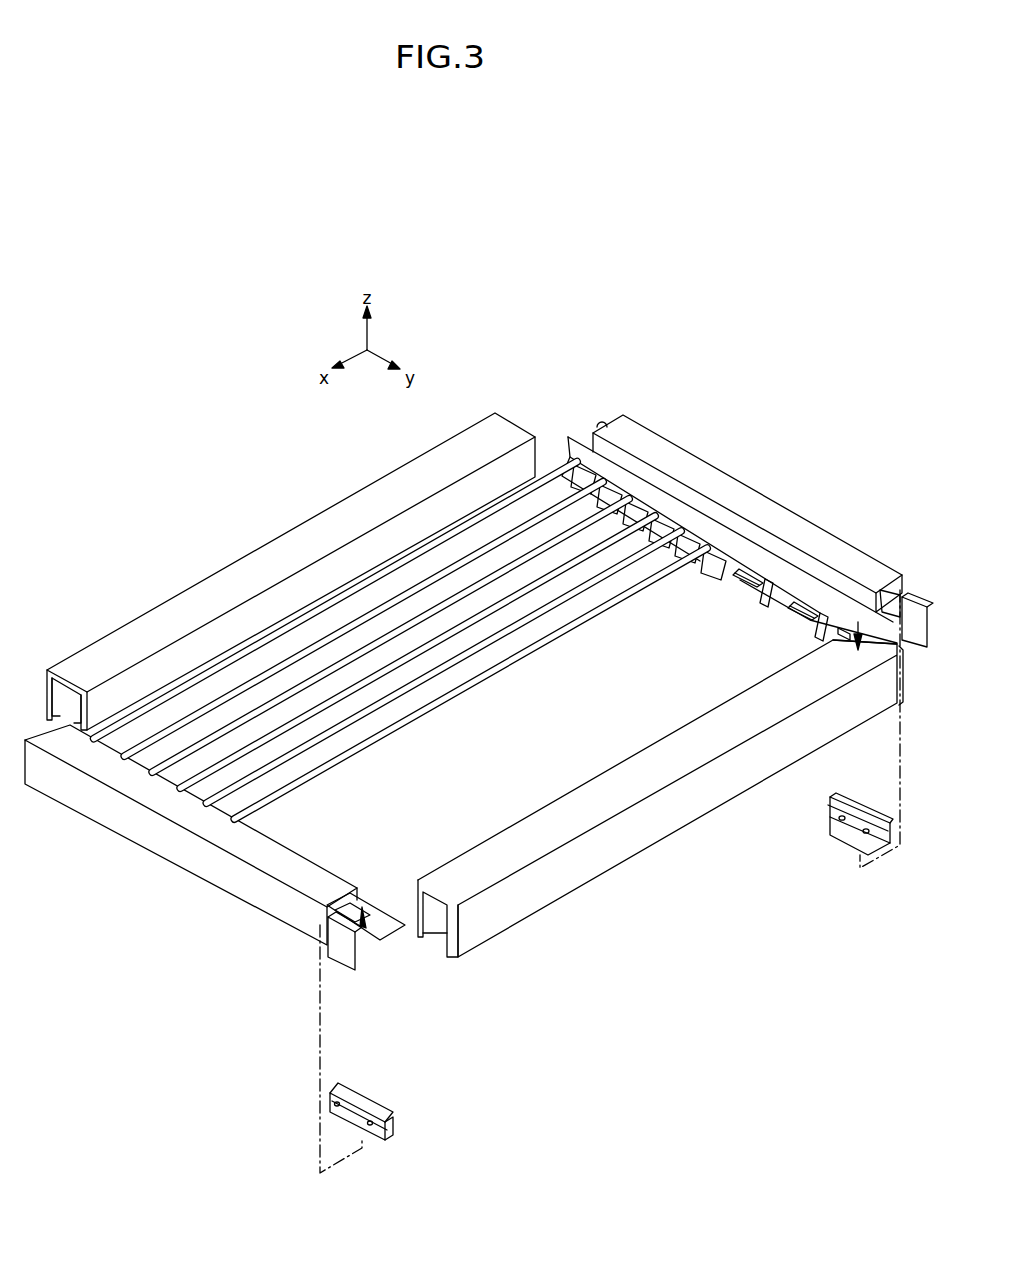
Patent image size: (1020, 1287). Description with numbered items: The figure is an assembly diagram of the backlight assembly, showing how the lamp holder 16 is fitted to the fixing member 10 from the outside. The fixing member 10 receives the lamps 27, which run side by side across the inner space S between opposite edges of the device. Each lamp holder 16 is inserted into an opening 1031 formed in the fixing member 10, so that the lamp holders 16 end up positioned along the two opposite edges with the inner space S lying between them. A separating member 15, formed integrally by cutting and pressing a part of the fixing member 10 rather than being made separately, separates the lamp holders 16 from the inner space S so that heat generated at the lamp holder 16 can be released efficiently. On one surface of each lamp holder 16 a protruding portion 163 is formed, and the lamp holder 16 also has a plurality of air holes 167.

The fixing member 10 is at (182, 874).
The separating member 15 is at (577, 437).
The lamp holder 16 is at (855, 847).
The protruding portion 163 is at (833, 797).
The air holes 167 is at (380, 1123).
The lamp 27 is at (505, 672).
The opening 1031 is at (798, 603).
The inner space S is at (483, 800).